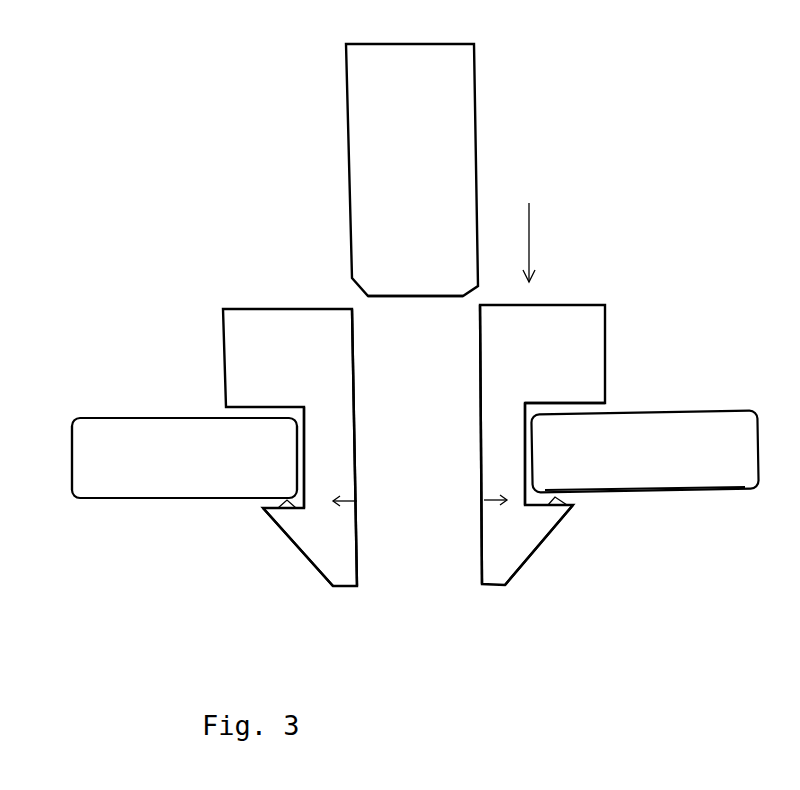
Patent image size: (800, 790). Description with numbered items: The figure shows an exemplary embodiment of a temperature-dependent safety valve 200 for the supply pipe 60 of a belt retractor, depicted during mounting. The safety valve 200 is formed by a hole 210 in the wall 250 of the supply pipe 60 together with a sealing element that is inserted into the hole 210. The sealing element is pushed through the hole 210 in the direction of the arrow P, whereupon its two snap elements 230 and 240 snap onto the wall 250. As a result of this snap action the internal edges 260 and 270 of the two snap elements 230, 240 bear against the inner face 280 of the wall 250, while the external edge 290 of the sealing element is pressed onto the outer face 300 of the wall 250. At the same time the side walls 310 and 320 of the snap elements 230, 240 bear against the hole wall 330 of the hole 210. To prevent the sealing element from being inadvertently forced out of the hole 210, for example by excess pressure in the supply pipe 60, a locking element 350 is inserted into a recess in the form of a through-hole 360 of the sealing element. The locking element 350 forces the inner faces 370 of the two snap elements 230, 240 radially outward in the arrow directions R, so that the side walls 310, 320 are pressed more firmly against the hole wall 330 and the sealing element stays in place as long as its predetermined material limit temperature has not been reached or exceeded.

The supply pipe 60 is at (100, 448).
The safety valve 200 is at (265, 308).
The hole 210 is at (422, 472).
The snap element 230 is at (520, 547).
The snap element 240 is at (322, 552).
The wall 250 is at (126, 417).
The internal edge 260 is at (272, 512).
The internal edge 270 is at (557, 498).
The inner face 280 is at (683, 491).
The external edge 290 is at (588, 373).
The outer face 300 is at (677, 410).
The side wall 310 is at (304, 434).
The side wall 320 is at (526, 431).
The hole wall 330 is at (297, 452).
The locking element 350 is at (458, 210).
The through-hole 360 is at (423, 326).
The inner faces 370 is at (417, 445).
The arrow direction of insertion P is at (534, 242).
The arrow directions of radial spreading R is at (420, 490).